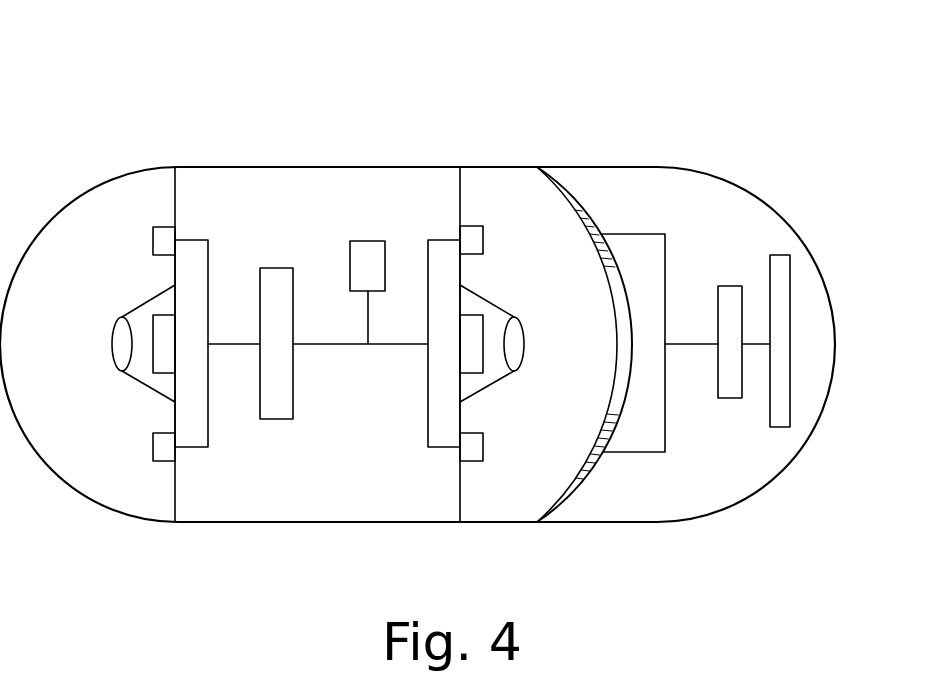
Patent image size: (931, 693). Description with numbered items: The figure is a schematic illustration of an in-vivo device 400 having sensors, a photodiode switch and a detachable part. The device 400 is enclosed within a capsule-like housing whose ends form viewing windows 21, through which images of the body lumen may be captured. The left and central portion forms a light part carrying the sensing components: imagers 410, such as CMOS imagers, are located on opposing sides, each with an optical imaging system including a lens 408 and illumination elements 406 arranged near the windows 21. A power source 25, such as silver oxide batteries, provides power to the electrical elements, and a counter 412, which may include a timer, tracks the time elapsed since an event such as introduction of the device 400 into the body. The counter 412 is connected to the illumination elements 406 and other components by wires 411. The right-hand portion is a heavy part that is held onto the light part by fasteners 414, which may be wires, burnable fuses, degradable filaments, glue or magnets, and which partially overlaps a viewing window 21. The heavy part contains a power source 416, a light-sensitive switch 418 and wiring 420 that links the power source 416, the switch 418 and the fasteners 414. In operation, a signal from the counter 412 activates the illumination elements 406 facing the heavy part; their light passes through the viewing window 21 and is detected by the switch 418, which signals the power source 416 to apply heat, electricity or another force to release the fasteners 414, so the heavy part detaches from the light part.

The in-vivo device 400 is at (195, 88).
The viewing window 21 is at (36, 237).
The illumination elements 406 is at (153, 243).
The lens 408 is at (112, 344).
The imager 410 is at (178, 360).
The power source 25 is at (277, 268).
The counter 412 is at (368, 241).
The wires 411 is at (368, 317).
The fasteners 414 is at (590, 212).
The wiring 420 is at (690, 343).
The switch 418 is at (732, 398).
The power source 416 is at (780, 427).